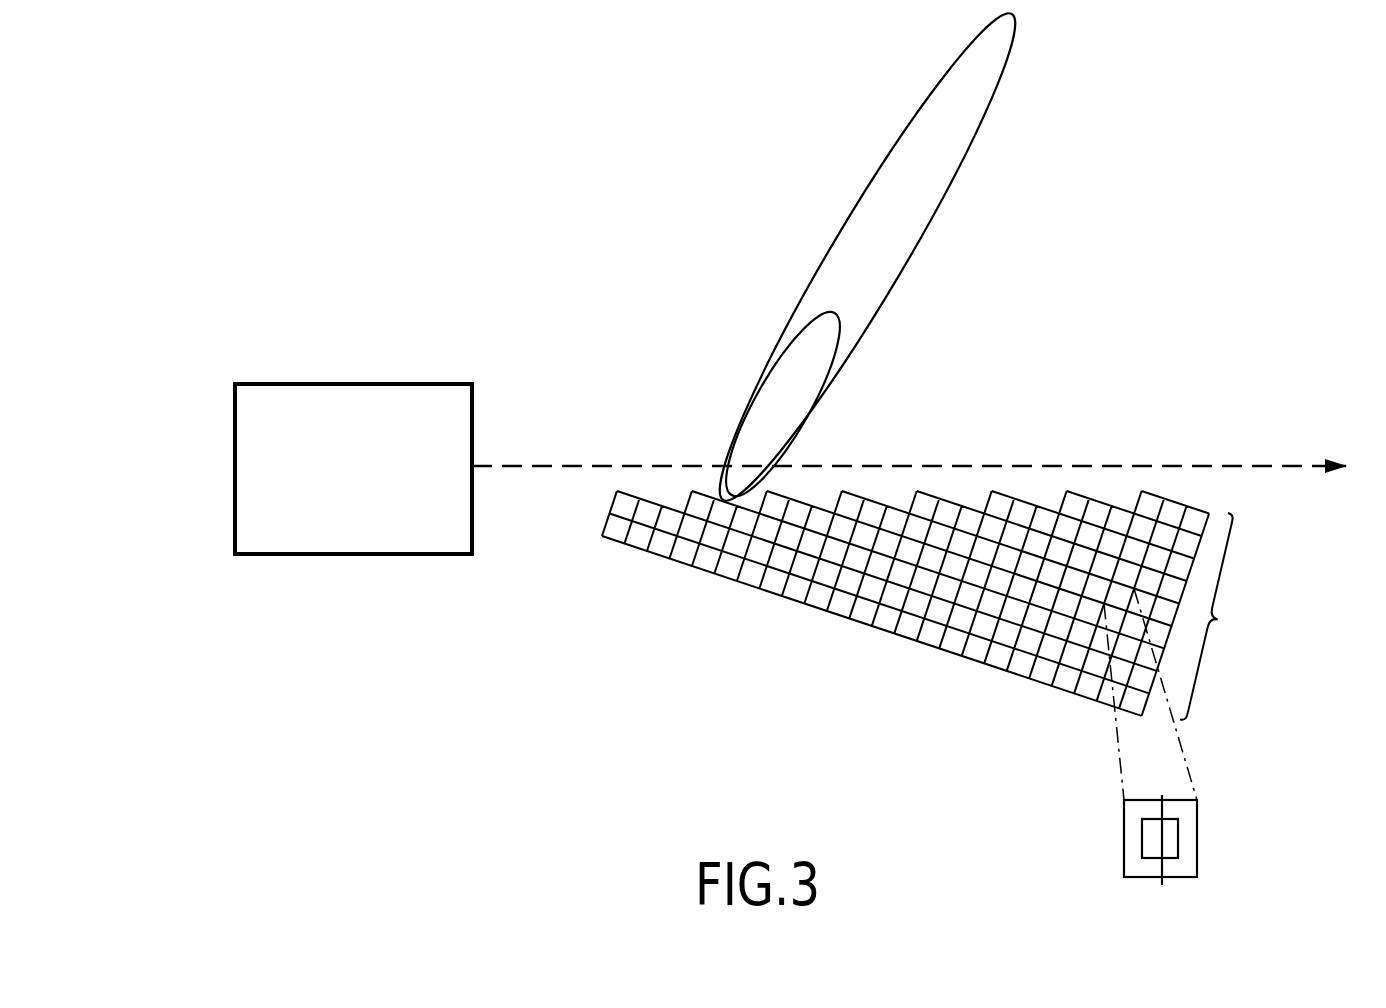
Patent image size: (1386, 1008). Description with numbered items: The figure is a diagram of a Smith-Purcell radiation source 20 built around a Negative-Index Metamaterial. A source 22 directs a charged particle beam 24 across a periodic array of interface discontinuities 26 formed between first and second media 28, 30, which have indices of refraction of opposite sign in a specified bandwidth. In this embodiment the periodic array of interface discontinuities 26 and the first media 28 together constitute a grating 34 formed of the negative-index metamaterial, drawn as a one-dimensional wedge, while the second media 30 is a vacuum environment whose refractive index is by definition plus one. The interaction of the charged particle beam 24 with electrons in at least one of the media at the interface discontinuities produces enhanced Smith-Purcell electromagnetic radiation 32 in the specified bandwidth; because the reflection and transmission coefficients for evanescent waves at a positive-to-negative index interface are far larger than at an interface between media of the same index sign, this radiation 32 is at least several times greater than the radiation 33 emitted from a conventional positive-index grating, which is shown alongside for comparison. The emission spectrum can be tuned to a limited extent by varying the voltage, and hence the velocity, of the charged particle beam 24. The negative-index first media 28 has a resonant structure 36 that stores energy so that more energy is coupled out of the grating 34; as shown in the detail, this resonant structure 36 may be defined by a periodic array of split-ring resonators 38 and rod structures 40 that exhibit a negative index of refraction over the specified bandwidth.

The Smith-Purcell radiation source 20 is at (306, 234).
The source 22 is at (234, 471).
The charged particle beam 24 is at (1256, 466).
The periodic array of interface discontinuities 26 is at (673, 492).
The first media 28 is at (1021, 612).
The second media 30 is at (990, 422).
The enhanced Smith-Purcell electromagnetic radiation 32 is at (882, 202).
The radiation 33 is at (843, 337).
The grating 34 is at (897, 508).
The resonant structure 36 is at (1214, 618).
The split-ring resonators 38 is at (1124, 828).
The rod structures 40 is at (1160, 847).